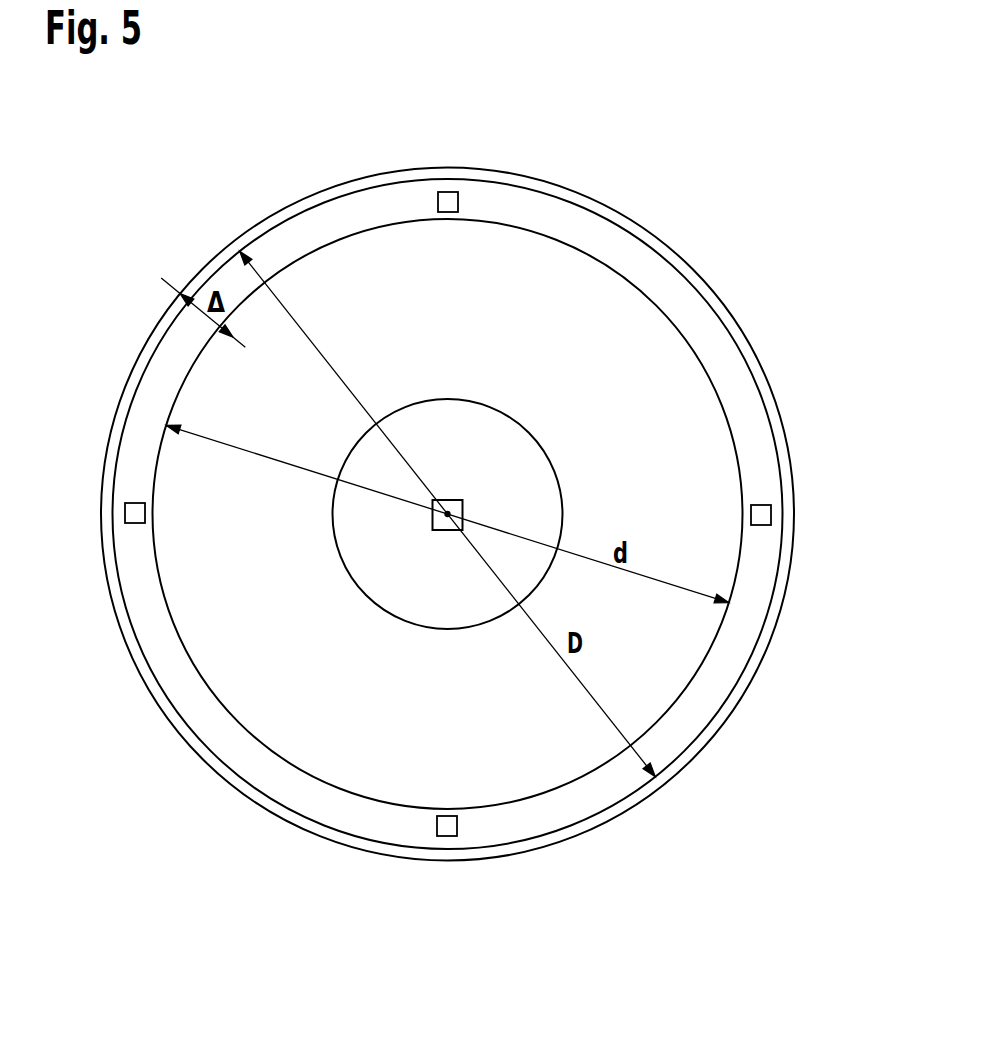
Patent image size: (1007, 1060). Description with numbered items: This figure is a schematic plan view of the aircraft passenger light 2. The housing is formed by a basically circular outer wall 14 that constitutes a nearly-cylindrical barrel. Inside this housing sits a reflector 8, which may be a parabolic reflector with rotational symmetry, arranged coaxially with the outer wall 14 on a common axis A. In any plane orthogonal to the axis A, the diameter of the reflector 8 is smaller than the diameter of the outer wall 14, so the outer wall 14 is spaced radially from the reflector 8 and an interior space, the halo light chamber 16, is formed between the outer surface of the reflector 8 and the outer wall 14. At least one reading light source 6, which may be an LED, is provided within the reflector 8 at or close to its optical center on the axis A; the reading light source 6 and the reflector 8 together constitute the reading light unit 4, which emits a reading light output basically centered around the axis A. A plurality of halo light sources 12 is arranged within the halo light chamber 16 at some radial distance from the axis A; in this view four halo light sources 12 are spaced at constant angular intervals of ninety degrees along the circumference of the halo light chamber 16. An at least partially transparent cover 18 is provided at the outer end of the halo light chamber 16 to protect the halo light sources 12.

The aircraft passenger light 2 is at (448, 514).
The reading light unit 4 is at (448, 496).
The reading light source 6 is at (457, 316).
The reflector 8 is at (539, 310).
The halo light source 12 is at (448, 200).
The outer wall 14 is at (237, 792).
The halo light chamber 16 is at (693, 687).
The at least partially transparent cover 18 is at (757, 433).
The axis A is at (448, 500).